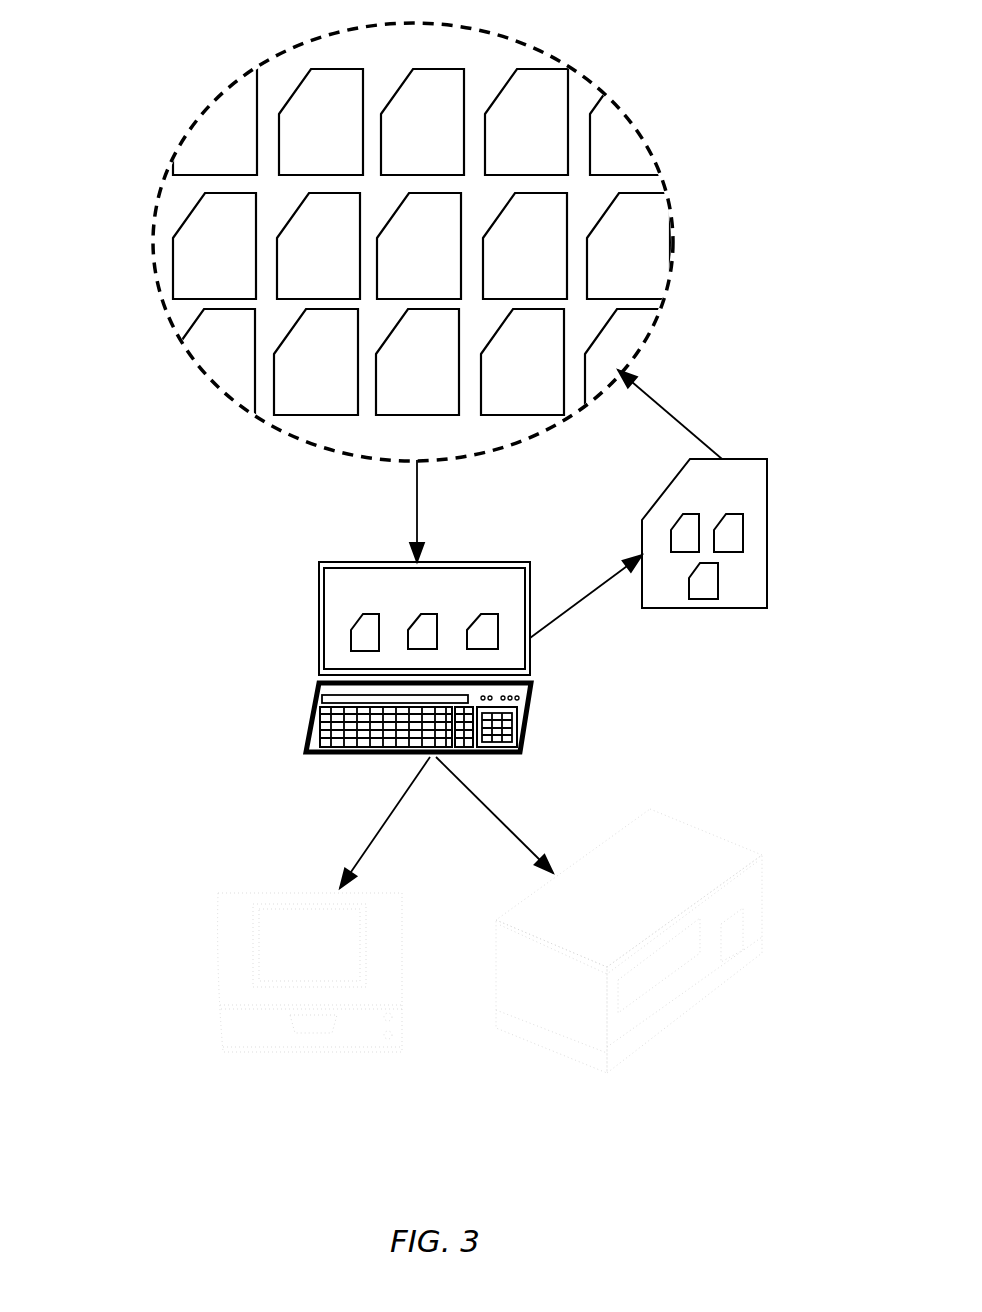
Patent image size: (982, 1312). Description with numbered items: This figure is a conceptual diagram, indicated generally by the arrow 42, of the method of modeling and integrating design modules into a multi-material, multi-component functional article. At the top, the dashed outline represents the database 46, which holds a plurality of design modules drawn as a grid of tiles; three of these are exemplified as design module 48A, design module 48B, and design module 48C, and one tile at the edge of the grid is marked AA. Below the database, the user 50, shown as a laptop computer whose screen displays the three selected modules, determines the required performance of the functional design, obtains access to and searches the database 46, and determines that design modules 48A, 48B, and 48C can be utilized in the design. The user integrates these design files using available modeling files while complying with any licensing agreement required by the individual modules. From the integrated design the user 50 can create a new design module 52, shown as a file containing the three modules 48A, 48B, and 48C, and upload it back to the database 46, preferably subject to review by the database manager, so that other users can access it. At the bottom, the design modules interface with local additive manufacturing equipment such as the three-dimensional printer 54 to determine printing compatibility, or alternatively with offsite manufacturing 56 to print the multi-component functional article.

The test system 42 is at (763, 90).
The database 46 is at (155, 250).
The die AA is at (672, 250).
The design module 48A is at (725, 495).
The design module 48B is at (798, 532).
The design module 48C is at (807, 605).
The new design module 52 is at (769, 474).
The user 50 is at (311, 708).
The 3D-printer 54 is at (220, 973).
The offsite manufacturing 56 is at (683, 1010).